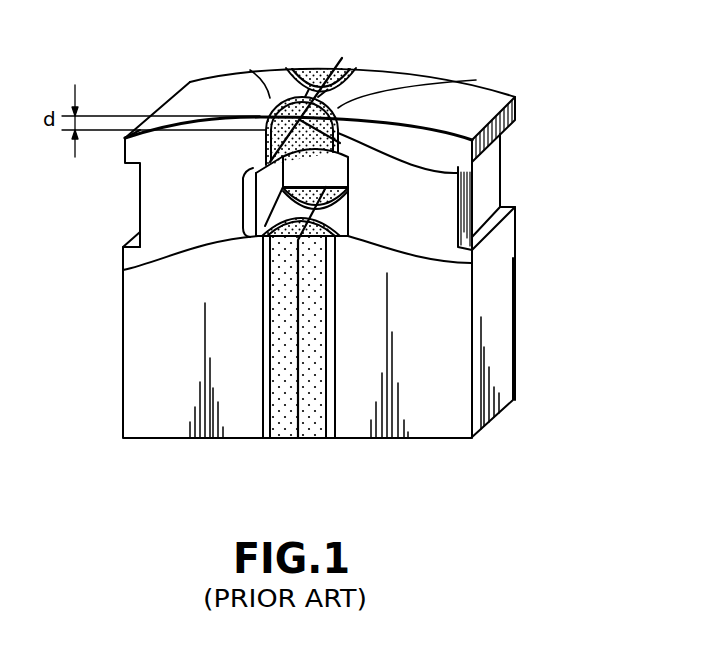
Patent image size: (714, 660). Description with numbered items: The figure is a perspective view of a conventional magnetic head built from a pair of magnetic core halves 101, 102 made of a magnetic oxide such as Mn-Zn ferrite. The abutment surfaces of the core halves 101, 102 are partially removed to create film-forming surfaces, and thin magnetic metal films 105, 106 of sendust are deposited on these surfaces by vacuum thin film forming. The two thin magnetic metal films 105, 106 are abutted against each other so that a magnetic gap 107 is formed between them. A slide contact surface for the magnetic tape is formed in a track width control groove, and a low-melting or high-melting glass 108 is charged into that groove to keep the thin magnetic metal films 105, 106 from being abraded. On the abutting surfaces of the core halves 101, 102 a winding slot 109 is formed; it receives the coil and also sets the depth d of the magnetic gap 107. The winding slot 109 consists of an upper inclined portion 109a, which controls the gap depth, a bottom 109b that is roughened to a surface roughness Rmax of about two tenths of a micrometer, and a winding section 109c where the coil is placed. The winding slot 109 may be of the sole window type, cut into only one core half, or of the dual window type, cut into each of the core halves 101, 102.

The magnetic core half 101 is at (160, 403).
The magnetic core half 102 is at (420, 405).
The thin magnetic metal film 105 is at (291, 70).
The thin magnetic metal film 106 is at (238, 75).
The magnetic gap 107 is at (385, 72).
The glass 108 is at (335, 72).
The winding slot 109 is at (476, 263).
The upper inclined portion 109a is at (458, 173).
The bottom 109b is at (123, 270).
The winding section 109c is at (243, 205).